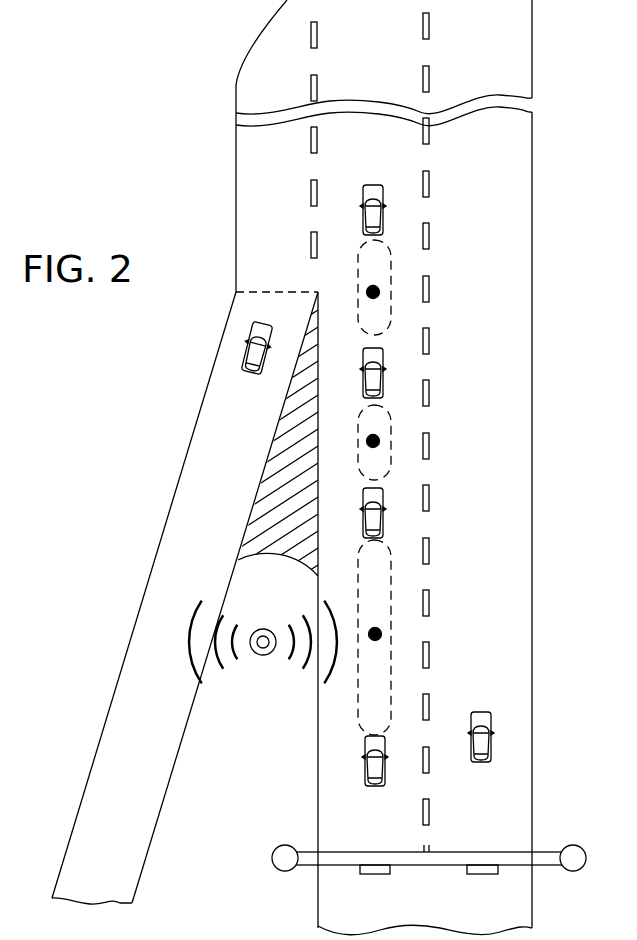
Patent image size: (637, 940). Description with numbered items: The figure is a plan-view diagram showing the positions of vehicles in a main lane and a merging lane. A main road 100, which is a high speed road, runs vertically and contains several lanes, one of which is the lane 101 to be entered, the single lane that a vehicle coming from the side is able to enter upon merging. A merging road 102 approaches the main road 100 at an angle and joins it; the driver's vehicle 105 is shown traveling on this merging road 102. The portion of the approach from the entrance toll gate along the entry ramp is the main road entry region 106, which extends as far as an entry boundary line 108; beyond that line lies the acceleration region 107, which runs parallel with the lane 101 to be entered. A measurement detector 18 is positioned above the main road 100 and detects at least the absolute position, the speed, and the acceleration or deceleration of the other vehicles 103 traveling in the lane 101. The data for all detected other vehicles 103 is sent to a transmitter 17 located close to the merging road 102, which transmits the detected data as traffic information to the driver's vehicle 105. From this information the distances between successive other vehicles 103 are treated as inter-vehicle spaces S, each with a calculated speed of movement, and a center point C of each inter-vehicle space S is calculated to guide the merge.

The main road 100 is at (516, 225).
The lane to be entered 101 is at (405, 58).
The merging road 102 is at (203, 397).
The other vehicles 103 is at (372, 185).
The driver's vehicle 105 is at (252, 373).
The main road entry region 106 is at (153, 608).
The acceleration region 107 is at (250, 157).
The entry boundary line 108 is at (254, 295).
The transmitter 17 is at (263, 657).
The measurement detector 18 is at (378, 876).
The center point C is at (368, 292).
The inter-vehicle spacing S is at (392, 308).